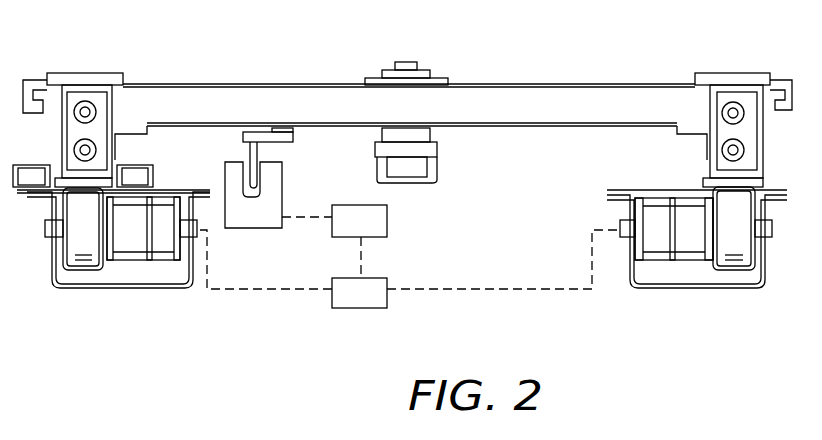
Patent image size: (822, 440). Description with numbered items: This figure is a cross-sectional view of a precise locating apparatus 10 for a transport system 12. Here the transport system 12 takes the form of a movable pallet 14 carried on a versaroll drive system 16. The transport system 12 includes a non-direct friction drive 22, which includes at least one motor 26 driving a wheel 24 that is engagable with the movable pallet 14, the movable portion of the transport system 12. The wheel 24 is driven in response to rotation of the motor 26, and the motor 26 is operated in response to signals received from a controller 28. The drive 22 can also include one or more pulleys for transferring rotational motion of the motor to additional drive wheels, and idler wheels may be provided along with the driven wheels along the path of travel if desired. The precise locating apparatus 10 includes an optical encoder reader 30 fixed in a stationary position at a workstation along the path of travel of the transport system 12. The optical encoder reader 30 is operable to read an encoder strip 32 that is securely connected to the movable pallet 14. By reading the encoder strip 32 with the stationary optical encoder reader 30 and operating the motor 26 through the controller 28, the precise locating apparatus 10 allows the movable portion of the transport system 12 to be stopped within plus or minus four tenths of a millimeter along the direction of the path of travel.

The precise locating apparatus 10 is at (208, 156).
The transport system 12 is at (296, 78).
The movable pallet 14 is at (586, 80).
The versaroll drive system 16 is at (132, 296).
The non-direct friction drive 22 is at (248, 304).
The wheel 24 is at (88, 263).
The motor 26 is at (387, 282).
The controller 28 is at (387, 222).
The optical encoder reader 30 is at (253, 229).
The encoder strip 32 is at (255, 178).